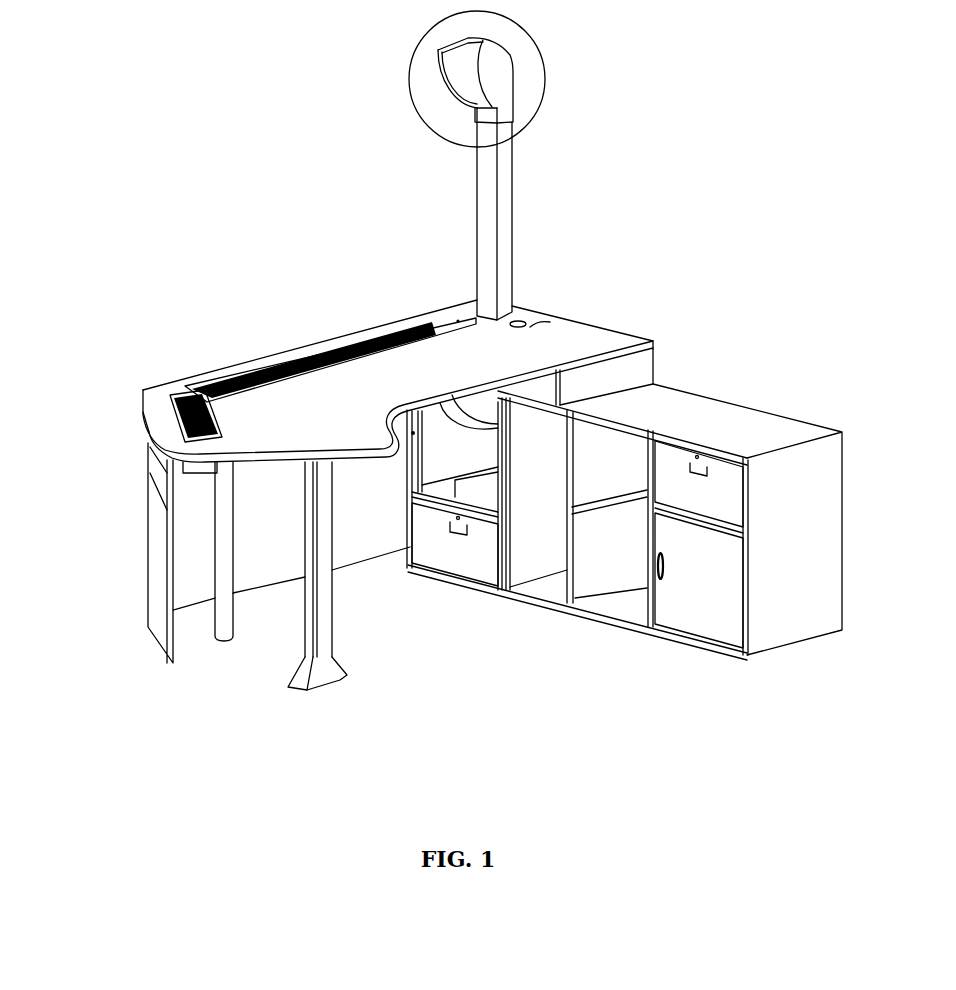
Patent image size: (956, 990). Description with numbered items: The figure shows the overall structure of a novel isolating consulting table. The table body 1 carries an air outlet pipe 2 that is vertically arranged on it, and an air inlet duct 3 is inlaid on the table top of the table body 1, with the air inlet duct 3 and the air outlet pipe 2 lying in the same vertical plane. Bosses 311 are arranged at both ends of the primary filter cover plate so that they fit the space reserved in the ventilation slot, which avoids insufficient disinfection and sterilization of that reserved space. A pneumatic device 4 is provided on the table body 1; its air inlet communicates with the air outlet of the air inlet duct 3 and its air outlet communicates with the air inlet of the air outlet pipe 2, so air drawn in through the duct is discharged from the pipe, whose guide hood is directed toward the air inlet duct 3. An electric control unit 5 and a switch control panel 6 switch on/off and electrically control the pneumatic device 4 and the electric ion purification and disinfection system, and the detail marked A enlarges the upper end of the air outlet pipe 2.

The table body 1 is at (265, 420).
The air outlet pipe 2 is at (488, 280).
The air inlet duct 3 is at (363, 348).
The bosses 311 is at (178, 395).
The pneumatic device 4 is at (488, 417).
The electric control unit 5 is at (478, 497).
The switch control panel 6 is at (548, 322).
The enlarged portion A is at (525, 100).